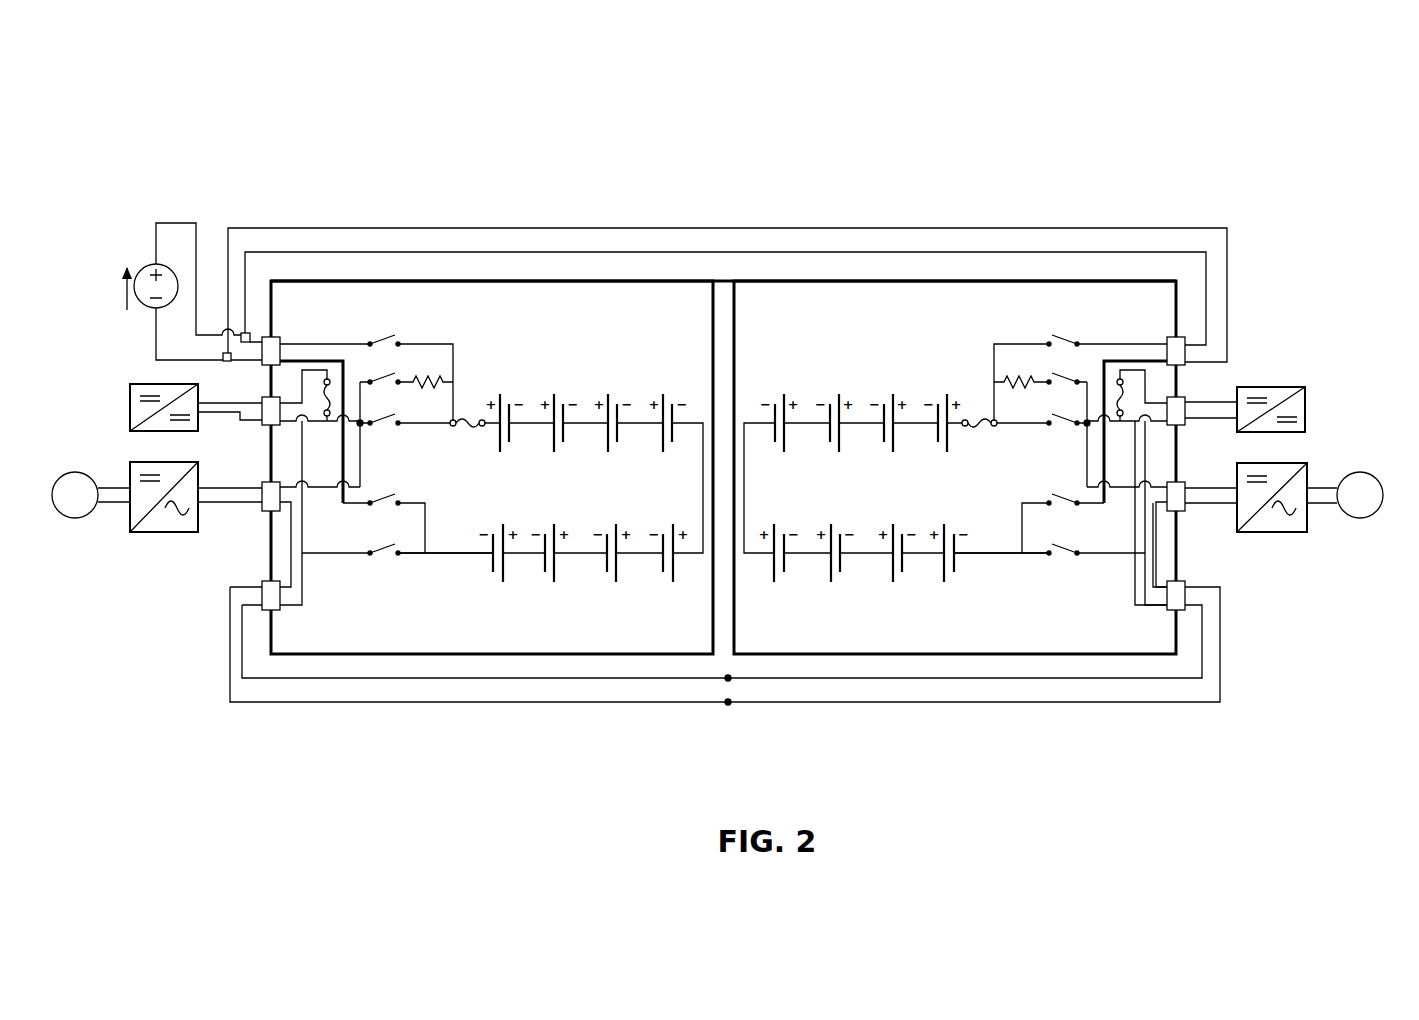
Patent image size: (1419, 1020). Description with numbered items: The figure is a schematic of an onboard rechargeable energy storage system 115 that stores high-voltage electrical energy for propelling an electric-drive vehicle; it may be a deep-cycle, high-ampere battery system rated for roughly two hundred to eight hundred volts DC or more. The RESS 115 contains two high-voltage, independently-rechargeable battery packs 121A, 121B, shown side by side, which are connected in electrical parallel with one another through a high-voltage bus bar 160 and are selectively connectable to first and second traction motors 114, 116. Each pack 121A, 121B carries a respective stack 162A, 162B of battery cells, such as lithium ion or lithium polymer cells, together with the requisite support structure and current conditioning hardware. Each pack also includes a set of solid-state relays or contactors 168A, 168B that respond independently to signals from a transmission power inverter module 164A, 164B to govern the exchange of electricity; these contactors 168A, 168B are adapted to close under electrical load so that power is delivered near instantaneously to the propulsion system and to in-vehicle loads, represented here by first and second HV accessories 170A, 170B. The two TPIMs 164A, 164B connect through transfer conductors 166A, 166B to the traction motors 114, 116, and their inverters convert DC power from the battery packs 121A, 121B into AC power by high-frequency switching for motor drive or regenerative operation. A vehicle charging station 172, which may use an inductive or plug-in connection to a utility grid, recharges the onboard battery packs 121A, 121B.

The rechargeable energy storage system 115 is at (533, 130).
The vehicle charging station 172 is at (124, 232).
The high-voltage bus bar 160 is at (217, 216).
The battery pack 121A is at (478, 279).
The battery pack 121B is at (963, 279).
The stack of battery cells 162A is at (653, 356).
The stack of battery cells 162B is at (789, 357).
The contactors 168A is at (387, 322).
The contactors 168B is at (1053, 321).
The HV accessory 170A is at (150, 383).
The HV accessory 170B is at (1285, 386).
The transmission power inverter module 164A is at (133, 461).
The transmission power inverter module 164B is at (1303, 462).
The transfer conductors 166A is at (115, 514).
The transfer conductors 166B is at (1322, 513).
The traction motor 114 is at (62, 519).
The traction motor 116 is at (1372, 519).